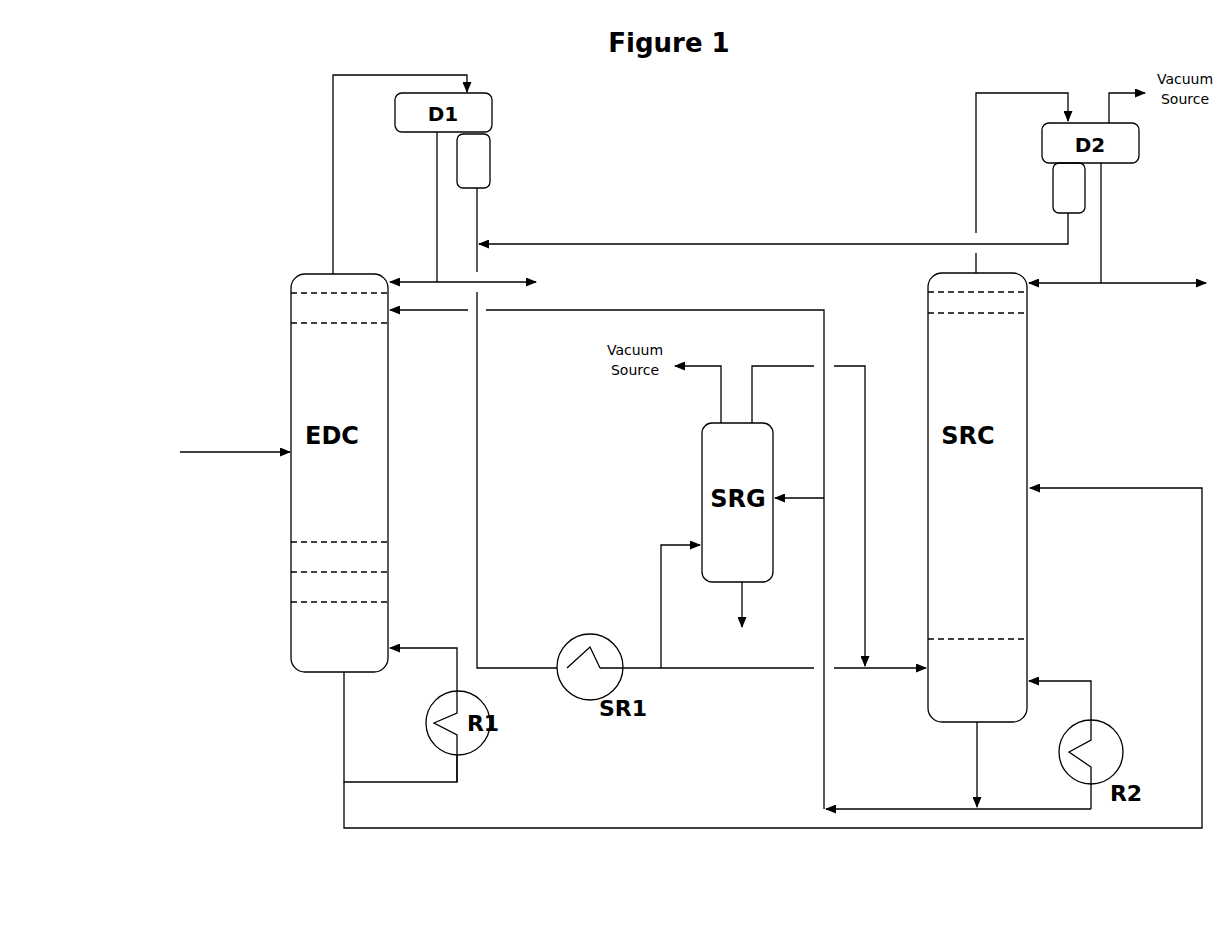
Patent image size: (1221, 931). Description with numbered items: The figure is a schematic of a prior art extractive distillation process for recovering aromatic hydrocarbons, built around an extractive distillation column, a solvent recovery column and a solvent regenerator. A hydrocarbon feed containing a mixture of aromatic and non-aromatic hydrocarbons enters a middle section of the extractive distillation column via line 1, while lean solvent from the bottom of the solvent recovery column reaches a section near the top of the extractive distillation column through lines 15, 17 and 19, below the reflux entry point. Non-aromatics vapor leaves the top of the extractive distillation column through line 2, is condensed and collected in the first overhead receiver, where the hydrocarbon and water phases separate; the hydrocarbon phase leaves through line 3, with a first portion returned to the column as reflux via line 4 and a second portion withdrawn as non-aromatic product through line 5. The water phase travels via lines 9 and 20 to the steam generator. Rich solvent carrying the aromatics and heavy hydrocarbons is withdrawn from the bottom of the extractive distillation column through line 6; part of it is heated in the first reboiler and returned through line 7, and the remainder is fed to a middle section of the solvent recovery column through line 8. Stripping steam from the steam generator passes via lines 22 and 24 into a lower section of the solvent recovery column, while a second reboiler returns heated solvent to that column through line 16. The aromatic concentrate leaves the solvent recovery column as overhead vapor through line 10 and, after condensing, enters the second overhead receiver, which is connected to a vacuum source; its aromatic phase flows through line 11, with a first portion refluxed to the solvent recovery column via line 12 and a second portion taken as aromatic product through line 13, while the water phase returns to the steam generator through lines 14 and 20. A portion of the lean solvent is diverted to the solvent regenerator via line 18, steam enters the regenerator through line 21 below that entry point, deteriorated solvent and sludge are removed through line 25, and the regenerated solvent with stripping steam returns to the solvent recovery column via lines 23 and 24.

The hydrocarbon feed line 1 is at (235, 439).
The non-aromatics overhead vapor line 2 is at (392, 174).
The non-aromatic hydrocarbon phase line 3 is at (429, 207).
The EDC reflux line 4 is at (413, 271).
The non-aromatic hydrocarbon product line 5 is at (497, 282).
The rich solvent withdrawal line 6 is at (390, 727).
The reboiler return line 7 is at (423, 657).
The rich solvent feed line to SRC 8 is at (773, 658).
The D1 water phase line 9 is at (487, 230).
The SRC overhead vapor line 10 is at (1006, 183).
The aromatic hydrocarbon phase line 11 is at (1115, 223).
The SRC reflux line 12 is at (1065, 295).
The aromatic hydrocarbon product line 13 is at (1153, 295).
The D2 water phase line 14 is at (773, 228).
The lean solvent withdrawal line 15 is at (990, 764).
The SRC reboiler return line 16 is at (1060, 690).
The lean solvent recycle line 17 is at (958, 798).
The lean solvent diversion line to SRG 18 is at (799, 487).
The lean solvent feed line to EDC 19 is at (607, 548).
The water feed line to steam generator 20 is at (504, 480).
The steam line to SRG 21 is at (665, 606).
The stripping steam line from SR1 22 is at (707, 682).
The SRG overhead line 23 is at (808, 505).
The stripping steam injection line to SRC 24 is at (880, 680).
The SRG bottom stream line 25 is at (741, 618).